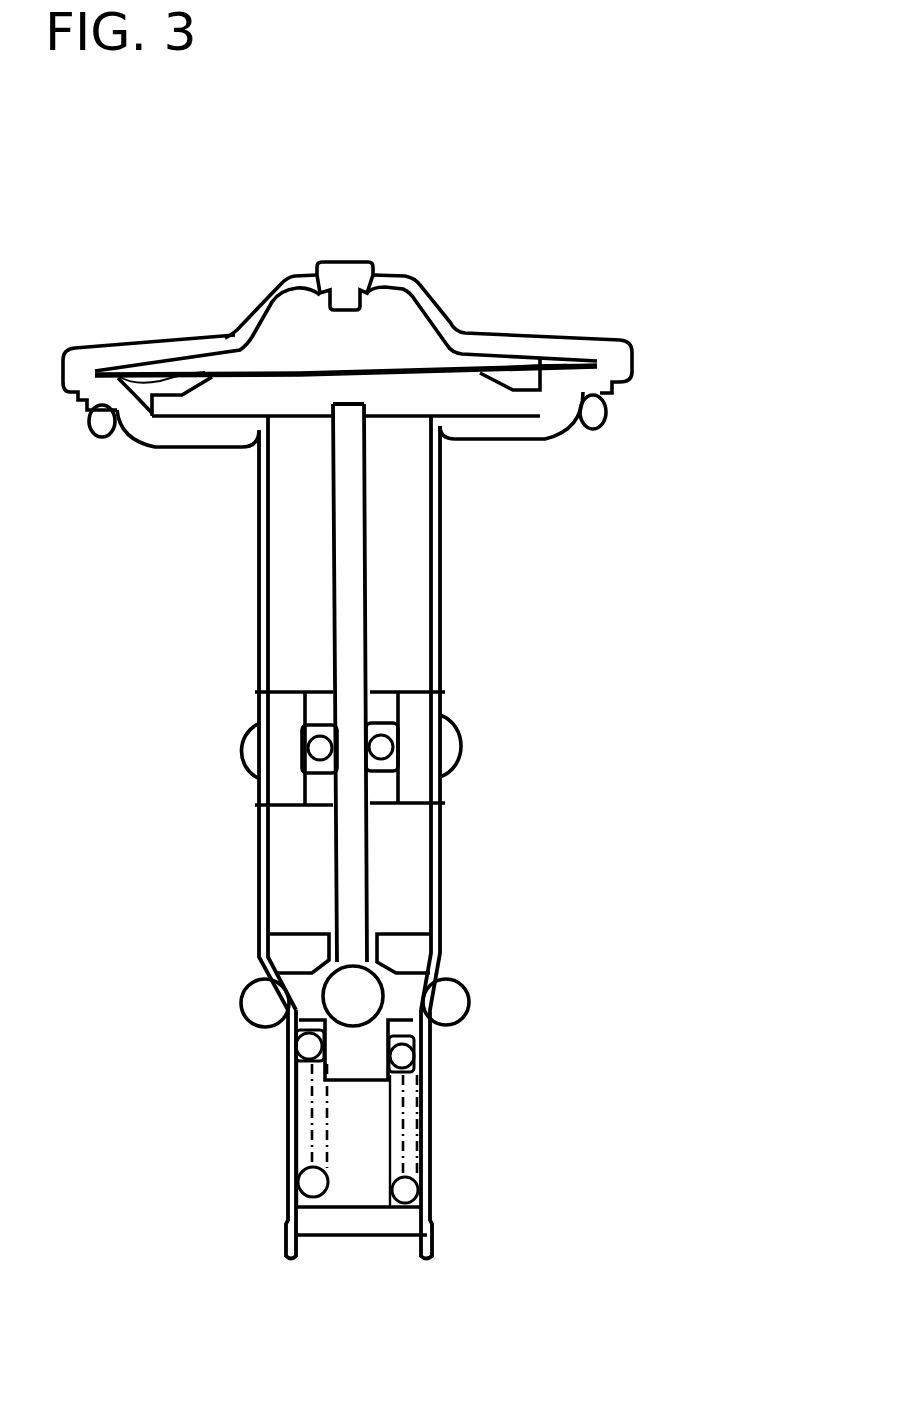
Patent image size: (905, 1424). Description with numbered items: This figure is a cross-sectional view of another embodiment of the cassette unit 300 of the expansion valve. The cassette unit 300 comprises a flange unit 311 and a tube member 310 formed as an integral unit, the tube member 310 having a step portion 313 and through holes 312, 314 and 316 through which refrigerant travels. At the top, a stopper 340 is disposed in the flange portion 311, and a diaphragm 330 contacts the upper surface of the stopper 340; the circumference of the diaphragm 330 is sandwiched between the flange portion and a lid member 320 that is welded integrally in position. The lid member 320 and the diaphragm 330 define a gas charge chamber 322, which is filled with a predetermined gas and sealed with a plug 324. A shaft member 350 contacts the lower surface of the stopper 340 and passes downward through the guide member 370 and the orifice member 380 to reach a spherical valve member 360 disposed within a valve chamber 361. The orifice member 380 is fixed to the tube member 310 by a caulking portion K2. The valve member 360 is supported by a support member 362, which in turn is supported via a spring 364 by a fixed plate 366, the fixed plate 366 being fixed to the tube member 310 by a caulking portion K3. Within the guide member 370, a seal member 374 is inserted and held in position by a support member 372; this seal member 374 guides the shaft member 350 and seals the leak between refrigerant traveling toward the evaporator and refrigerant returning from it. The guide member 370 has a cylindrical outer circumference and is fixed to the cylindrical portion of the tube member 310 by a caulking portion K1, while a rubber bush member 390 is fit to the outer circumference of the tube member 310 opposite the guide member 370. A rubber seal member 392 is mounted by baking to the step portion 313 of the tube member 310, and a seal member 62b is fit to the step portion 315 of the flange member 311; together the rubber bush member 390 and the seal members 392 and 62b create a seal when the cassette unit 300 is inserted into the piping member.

The cassette unit 300 is at (422, 215).
The tube member 310 is at (437, 503).
The flange unit 311 is at (552, 432).
The through hole 312 is at (440, 620).
The step portion 313 is at (446, 1012).
The through hole 314 is at (440, 900).
The step portion 315 is at (610, 393).
The through hole 316 is at (430, 1128).
The lid member 320 is at (535, 352).
The gas charge chamber 322 is at (282, 345).
The plug 324 is at (345, 278).
The diaphragm 330 is at (157, 365).
The stopper 340 is at (198, 407).
The shaft member 350 is at (343, 560).
The valve member 360 is at (342, 992).
The valve chamber 361 is at (300, 995).
The support member 362 is at (342, 1065).
The spring 364 is at (307, 1180).
The fixed plate 366 is at (318, 1225).
The guide member 370 is at (280, 710).
The support member 372 is at (388, 710).
The seal member 374 is at (405, 760).
The orifice member 380 is at (293, 952).
The rubber bush member 390 is at (250, 758).
The rubber seal member 392 is at (257, 1005).
The caulking portion K1 is at (443, 746).
The caulking portion K2 is at (443, 952).
The caulking portion K3 is at (430, 1218).
The seal member 62b is at (610, 415).